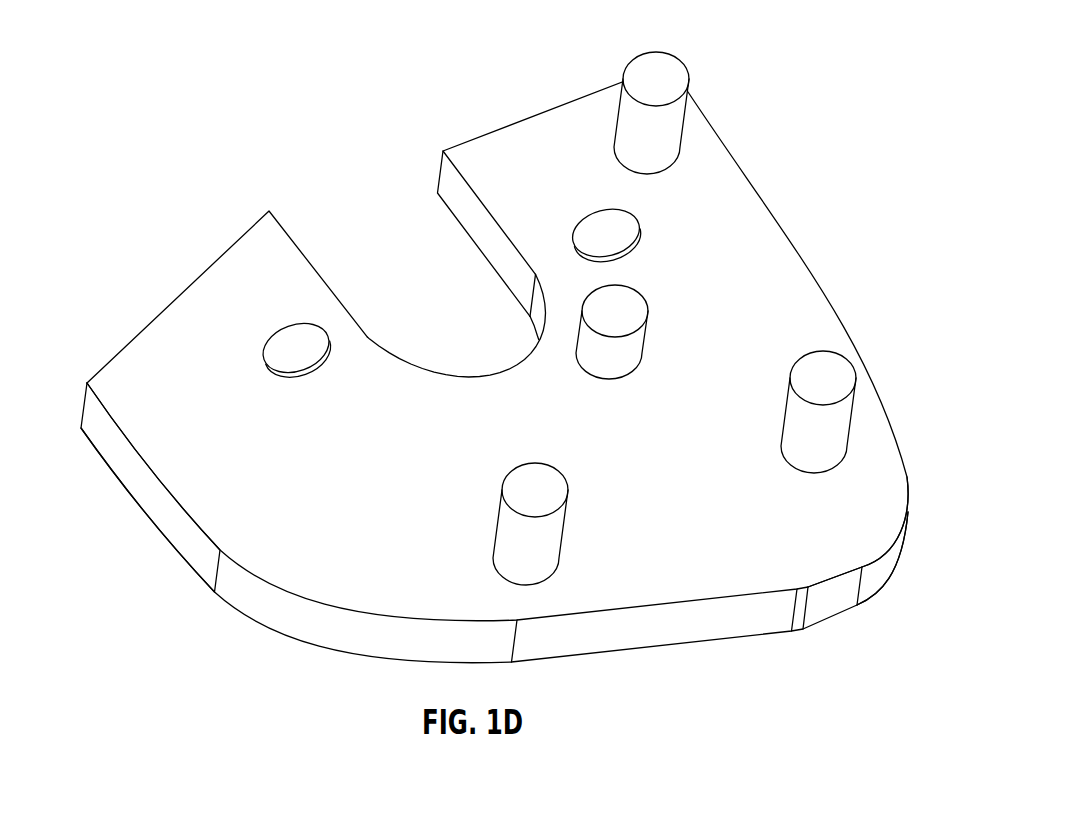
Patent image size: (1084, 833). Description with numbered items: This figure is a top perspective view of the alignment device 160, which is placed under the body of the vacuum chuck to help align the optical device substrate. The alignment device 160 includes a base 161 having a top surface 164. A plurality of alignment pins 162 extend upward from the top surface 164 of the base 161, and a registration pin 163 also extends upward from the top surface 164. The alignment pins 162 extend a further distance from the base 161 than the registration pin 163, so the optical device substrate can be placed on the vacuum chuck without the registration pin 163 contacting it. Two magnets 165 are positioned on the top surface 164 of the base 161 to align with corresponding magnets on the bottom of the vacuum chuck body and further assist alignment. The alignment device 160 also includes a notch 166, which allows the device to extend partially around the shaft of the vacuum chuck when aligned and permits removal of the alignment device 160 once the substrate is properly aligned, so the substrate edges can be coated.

The alignment device 160 is at (152, 253).
The base 161 is at (155, 507).
The alignment pins 162 is at (663, 70).
The registration pin 163 is at (618, 312).
The top surface 164 is at (867, 505).
The magnets 165 is at (298, 352).
The notch 166 is at (472, 343).